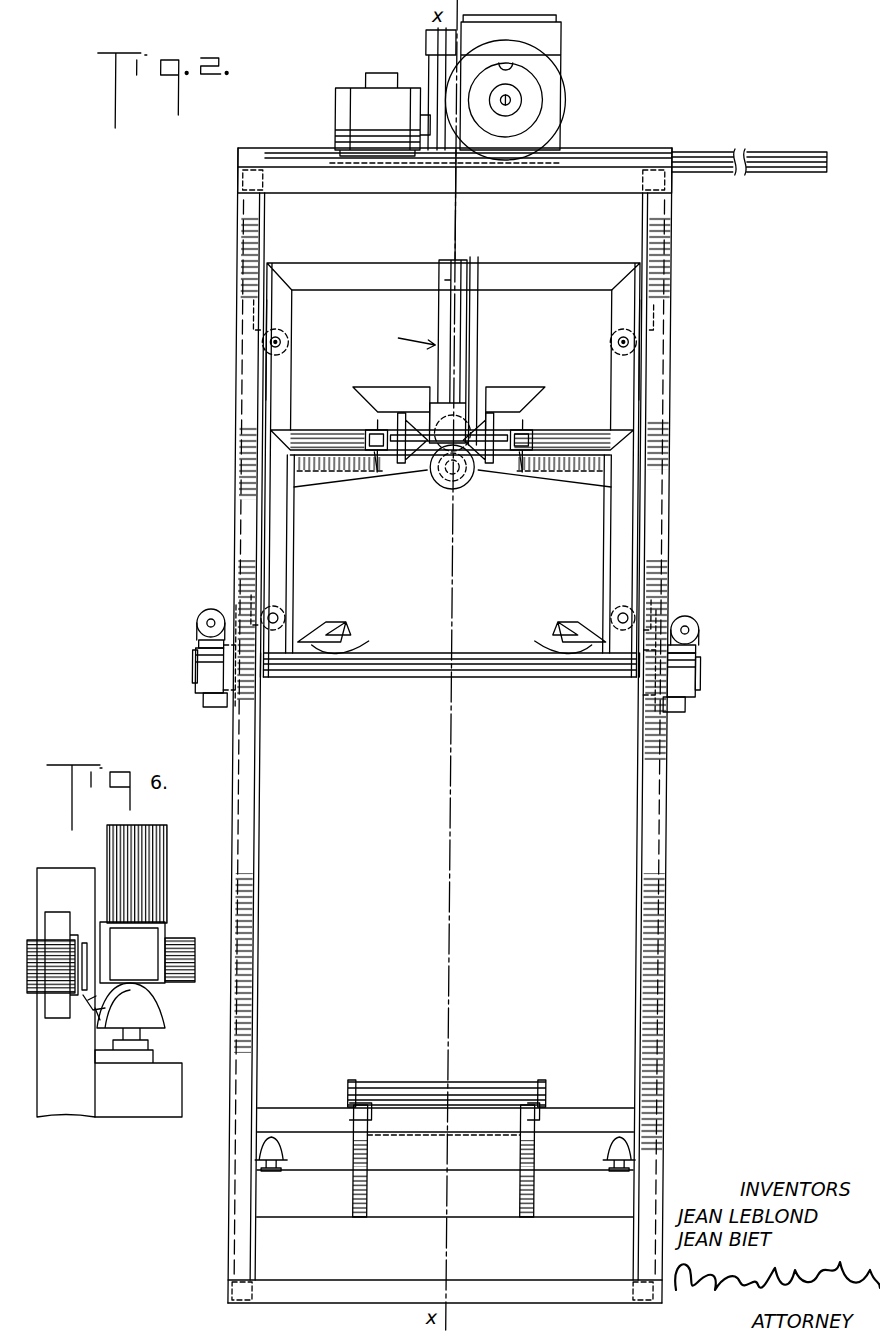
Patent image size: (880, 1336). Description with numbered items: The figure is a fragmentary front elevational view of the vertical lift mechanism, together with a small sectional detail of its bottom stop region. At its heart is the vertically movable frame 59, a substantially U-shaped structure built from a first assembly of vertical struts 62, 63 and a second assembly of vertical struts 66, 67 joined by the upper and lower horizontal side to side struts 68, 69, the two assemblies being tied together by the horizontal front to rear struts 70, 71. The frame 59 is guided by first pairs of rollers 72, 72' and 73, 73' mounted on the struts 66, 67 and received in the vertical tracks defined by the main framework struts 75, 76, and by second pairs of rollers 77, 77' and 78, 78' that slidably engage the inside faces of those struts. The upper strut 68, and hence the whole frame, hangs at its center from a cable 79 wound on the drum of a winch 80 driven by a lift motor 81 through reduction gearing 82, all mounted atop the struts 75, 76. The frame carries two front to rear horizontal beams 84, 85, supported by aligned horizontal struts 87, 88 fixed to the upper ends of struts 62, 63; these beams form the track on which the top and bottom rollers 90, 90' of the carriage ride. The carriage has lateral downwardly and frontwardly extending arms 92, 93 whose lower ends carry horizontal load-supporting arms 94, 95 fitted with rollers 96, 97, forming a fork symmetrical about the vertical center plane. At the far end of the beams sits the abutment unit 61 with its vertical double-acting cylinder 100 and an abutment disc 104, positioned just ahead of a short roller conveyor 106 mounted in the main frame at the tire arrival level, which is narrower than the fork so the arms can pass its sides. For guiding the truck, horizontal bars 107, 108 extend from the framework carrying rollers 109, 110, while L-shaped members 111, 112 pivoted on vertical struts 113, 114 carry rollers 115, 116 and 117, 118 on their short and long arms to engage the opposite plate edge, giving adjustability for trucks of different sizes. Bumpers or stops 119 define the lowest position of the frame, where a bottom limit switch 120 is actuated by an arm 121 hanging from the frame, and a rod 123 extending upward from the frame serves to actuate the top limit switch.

In FIG. 2, the vertically movable frame 59 is at (565, 267).
In FIG. 2, the abutment unit 61 is at (406, 334).
In FIG. 2, the vertical strut 62 is at (638, 566).
In FIG. 2, the vertical strut 63 is at (276, 538).
In FIG. 2, the vertical strut 66 is at (636, 383).
In FIG. 2, the vertical strut 67 is at (277, 392).
In FIG. 6, the vertical strut 67 is at (165, 845).
In FIG. 2, the upper horizontal side to side strut 68 is at (354, 277).
In FIG. 6, the lower horizontal side to side strut 69 is at (178, 985).
In FIG. 2, the horizontal front to rear strut 70 is at (624, 677).
In FIG. 2, the horizontal front to rear strut 71 is at (280, 680).
In FIG. 6, the horizontal front to rear strut 71 is at (165, 925).
In FIG. 2, the roller 72 is at (684, 315).
In FIG. 2, the roller 72' is at (686, 612).
In FIG. 2, the roller 73 is at (225, 313).
In FIG. 2, the roller 73' is at (219, 601).
In FIG. 2, the vertical strut 75 is at (637, 878).
In FIG. 2, the vertical strut 76 is at (263, 800).
In FIG. 6, the vertical strut 76 is at (67, 1117).
In FIG. 2, the roller 77 is at (602, 334).
In FIG. 2, the roller 77' is at (663, 603).
In FIG. 2, the roller 78 is at (304, 336).
In FIG. 2, the roller 78' is at (308, 603).
In FIG. 2, the cable 79 is at (455, 222).
In FIG. 2, the winch 80 is at (550, 125).
In FIG. 2, the motor 81 is at (340, 115).
In FIG. 2, the reduction gearing 82 is at (553, 33).
In FIG. 2, the horizontal beam 84 is at (528, 472).
In FIG. 2, the horizontal beam 85 is at (388, 472).
In FIG. 2, the horizontal strut 87 is at (585, 432).
In FIG. 2, the horizontal strut 88 is at (316, 427).
In FIG. 2, the top roller 90 is at (451, 412).
In FIG. 2, the bottom roller 90' is at (442, 487).
In FIG. 2, the lateral arm 92 is at (605, 540).
In FIG. 2, the lateral arm 93 is at (300, 517).
In FIG. 2, the horizontal arm 94 is at (544, 638).
In FIG. 2, the horizontal arm 95 is at (355, 641).
In FIG. 2, the roller 96 is at (554, 630).
In FIG. 2, the roller 97 is at (350, 630).
In FIG. 2, the vertical double-acting cylinder 100 is at (448, 305).
In FIG. 2, the abutment disc 104 is at (446, 482).
In FIG. 2, the roller conveyor 106 is at (521, 1090).
In FIG. 2, the horizontal bar 107 is at (700, 650).
In FIG. 2, the horizontal bar 108 is at (205, 640).
In FIG. 2, the roller 109 is at (690, 705).
In FIG. 2, the roller 110 is at (208, 700).
In FIG. 2, the L-shaped member 111 is at (692, 670).
In FIG. 2, the L-shaped member 112 is at (203, 658).
In FIG. 2, the vertical strut 113 is at (663, 826).
In FIG. 2, the vertical strut 114 is at (240, 732).
In FIG. 2, the roller 115 is at (703, 688).
In FIG. 2, the roller 116 is at (703, 630).
In FIG. 2, the roller 117 is at (200, 680).
In FIG. 2, the roller 118 is at (201, 612).
In FIG. 2, the bumper 119 is at (286, 1150).
In FIG. 6, the bumper 119 is at (160, 1030).
In FIG. 6, the bottom limit switch 120 is at (53, 945).
In FIG. 6, the arm 121 is at (95, 1020).
In FIG. 2, the rod 123 is at (481, 310).